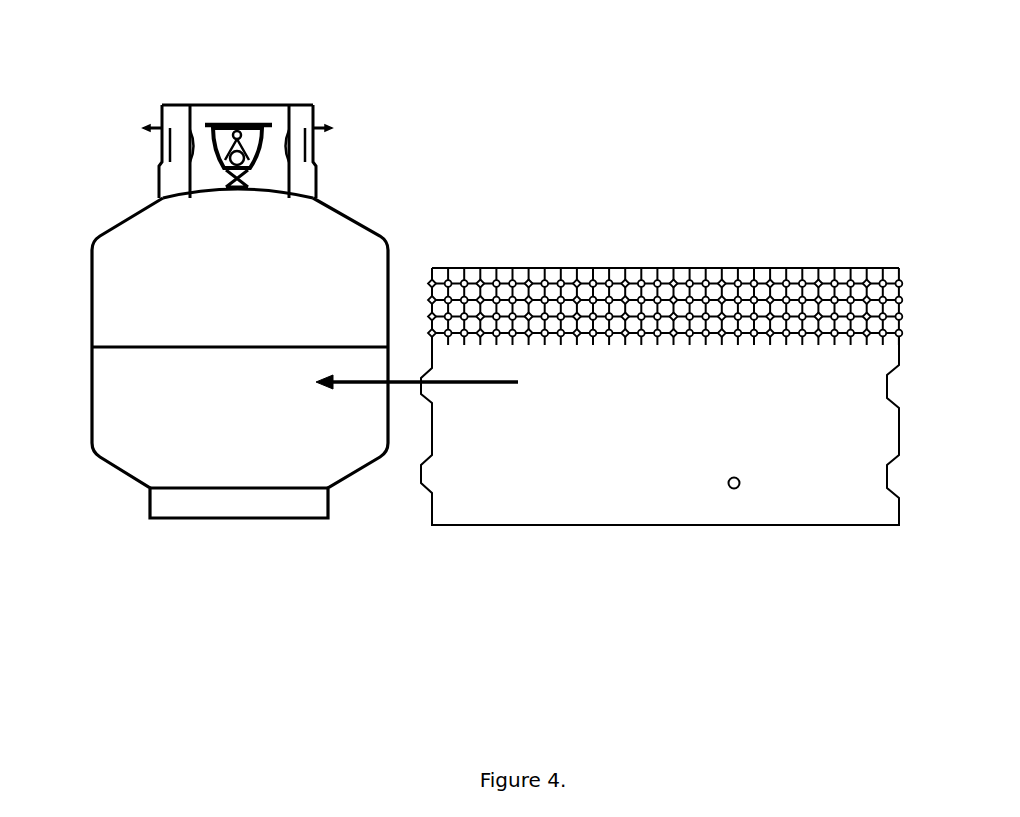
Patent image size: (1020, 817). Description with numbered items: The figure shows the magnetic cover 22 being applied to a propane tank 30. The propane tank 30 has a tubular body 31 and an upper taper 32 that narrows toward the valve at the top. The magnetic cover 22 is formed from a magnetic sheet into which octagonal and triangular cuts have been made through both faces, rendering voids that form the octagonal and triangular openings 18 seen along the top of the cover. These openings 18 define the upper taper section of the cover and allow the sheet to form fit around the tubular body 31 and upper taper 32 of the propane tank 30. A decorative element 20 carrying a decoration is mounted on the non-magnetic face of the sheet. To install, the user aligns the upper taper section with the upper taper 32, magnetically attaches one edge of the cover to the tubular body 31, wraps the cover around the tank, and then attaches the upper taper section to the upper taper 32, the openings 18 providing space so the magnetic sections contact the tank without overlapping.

The octagonal and triangular openings 18 is at (705, 293).
The decorative element 20 is at (730, 492).
The magnetic cover 22 is at (488, 567).
The propane tank 30 is at (205, 128).
The tubular body 31 is at (127, 368).
The upper taper 32 is at (155, 230).